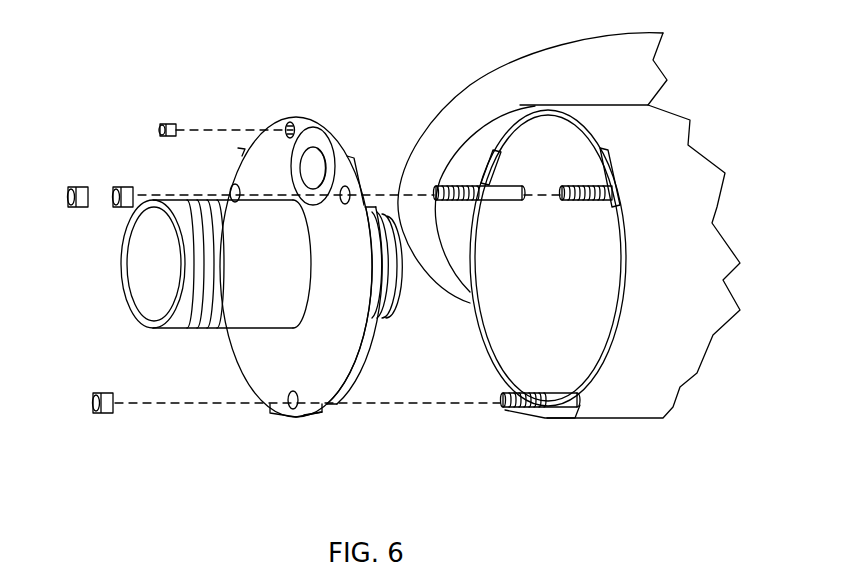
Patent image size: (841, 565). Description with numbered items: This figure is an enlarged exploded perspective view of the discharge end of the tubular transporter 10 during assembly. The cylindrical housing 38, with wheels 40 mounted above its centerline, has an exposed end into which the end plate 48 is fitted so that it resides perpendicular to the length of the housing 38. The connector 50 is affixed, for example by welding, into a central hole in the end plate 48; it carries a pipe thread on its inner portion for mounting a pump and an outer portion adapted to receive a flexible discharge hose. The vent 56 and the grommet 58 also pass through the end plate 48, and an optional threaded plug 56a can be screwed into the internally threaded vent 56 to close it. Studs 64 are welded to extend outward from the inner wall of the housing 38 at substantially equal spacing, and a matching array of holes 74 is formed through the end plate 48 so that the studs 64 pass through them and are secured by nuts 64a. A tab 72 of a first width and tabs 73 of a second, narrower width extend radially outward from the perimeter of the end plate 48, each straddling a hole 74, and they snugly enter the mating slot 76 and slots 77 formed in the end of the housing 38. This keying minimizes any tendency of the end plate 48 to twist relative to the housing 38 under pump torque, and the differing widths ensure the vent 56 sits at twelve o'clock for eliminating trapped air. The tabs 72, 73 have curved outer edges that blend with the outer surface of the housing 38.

The tubular transporter 10 is at (200, 465).
The housing 38 is at (663, 395).
The wheels 40 is at (458, 93).
The end plate 48 is at (262, 353).
The connector 50 is at (150, 307).
The vent 56 is at (290, 122).
The threaded plug 56a is at (168, 123).
The grommet 58 is at (313, 143).
The studs 64 is at (502, 408).
The nuts 64a is at (110, 415).
The tab 72 is at (308, 418).
The tabs 73 is at (228, 190).
The holes 74 is at (282, 408).
The slot 76 is at (560, 418).
The slots 77 is at (497, 171).